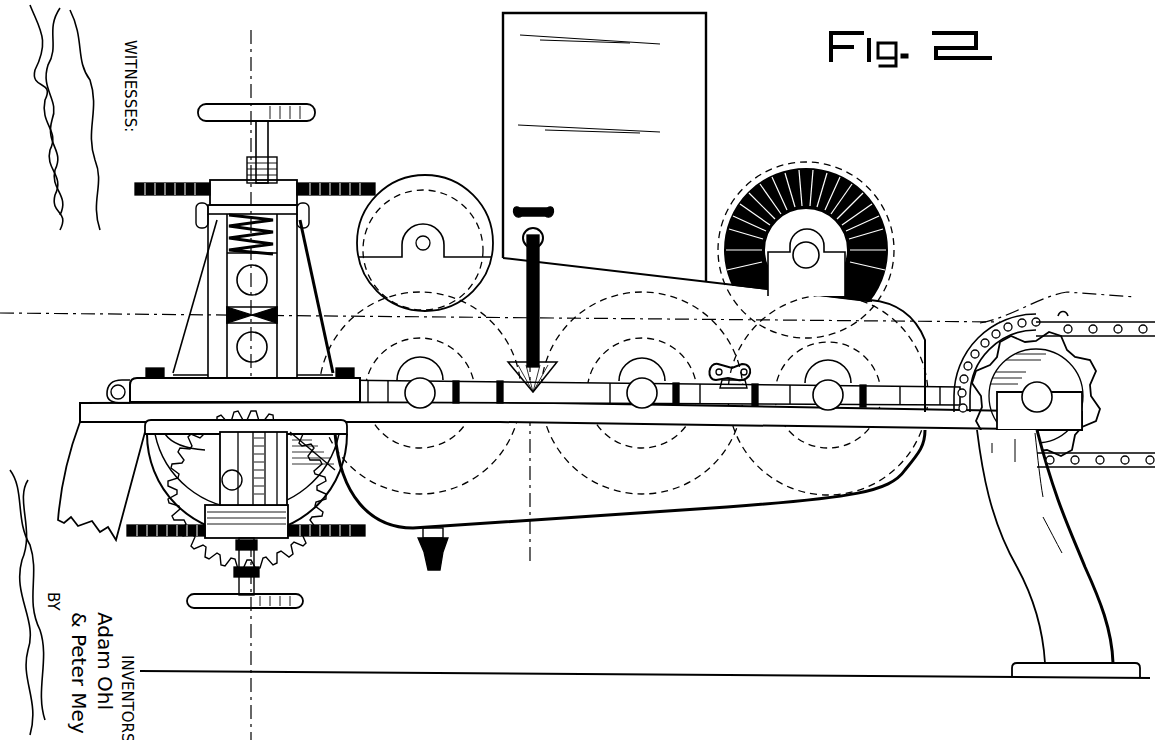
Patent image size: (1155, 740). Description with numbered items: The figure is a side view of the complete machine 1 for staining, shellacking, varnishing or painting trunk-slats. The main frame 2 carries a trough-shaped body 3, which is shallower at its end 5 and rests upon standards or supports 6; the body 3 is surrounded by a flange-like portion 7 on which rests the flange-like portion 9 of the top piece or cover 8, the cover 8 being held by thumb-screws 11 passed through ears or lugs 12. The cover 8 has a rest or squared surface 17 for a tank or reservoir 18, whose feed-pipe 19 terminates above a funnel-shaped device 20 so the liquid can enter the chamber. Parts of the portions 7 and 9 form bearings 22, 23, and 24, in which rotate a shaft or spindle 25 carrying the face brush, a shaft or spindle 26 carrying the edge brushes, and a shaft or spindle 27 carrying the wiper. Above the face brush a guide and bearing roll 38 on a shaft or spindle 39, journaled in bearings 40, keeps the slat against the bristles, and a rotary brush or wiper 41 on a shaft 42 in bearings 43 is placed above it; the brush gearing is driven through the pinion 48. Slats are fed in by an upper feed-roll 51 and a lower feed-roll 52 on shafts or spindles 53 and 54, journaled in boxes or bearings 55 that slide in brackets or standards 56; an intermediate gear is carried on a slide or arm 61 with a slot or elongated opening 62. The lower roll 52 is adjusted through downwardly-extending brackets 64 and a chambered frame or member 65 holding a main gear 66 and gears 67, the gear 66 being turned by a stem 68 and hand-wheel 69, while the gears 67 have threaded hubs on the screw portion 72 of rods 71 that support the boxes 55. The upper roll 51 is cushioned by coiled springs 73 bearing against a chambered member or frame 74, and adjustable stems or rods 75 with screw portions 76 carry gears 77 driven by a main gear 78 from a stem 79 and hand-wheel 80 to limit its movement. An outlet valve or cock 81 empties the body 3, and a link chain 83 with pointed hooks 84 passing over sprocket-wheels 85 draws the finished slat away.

The complete machine 1 is at (407, 144).
The main frame 2 is at (85, 410).
The trough-shaped body 3 is at (716, 500).
The end of trough-shaped body 5 is at (599, 289).
The standards or supports 6 is at (595, 387).
The flange-like portion 7 is at (490, 408).
The top piece or cover 8 is at (898, 312).
The flange-like portion of cover 9 is at (503, 310).
The thumb-screws 11 is at (742, 366).
The ears or lugs 12 is at (753, 373).
The rest or squared surface 17 is at (666, 268).
The tank or reservoir 18 is at (696, 112).
The feed-pipe 19 is at (540, 305).
The funnel-shaped device 20 is at (545, 380).
The bearings 22 is at (440, 380).
The bearings 23 is at (658, 382).
The bearings 24 is at (848, 383).
The shaft or spindle 25 is at (420, 390).
The shaft or spindle 26 is at (642, 390).
The shaft or spindle 27 is at (830, 392).
The guide and bearing roll 38 is at (460, 187).
The shaft or spindle 39 is at (433, 240).
The bearings 40 is at (420, 238).
The rotary brush or wiper 41 is at (795, 172).
The shaft 42 is at (804, 264).
The bearings 43 is at (822, 245).
The pinion 48 is at (136, 490).
The feed-roll 51 is at (236, 308).
The feed-roll 52 is at (228, 316).
The shaft or spindle 53 is at (236, 280).
The shaft or spindle 54 is at (240, 347).
The boxes or bearings 55 is at (280, 264).
The brackets or standards 56 is at (214, 262).
The slide or arm 61 is at (126, 380).
The slot or elongated opening 62 is at (112, 390).
The downwardly-extending brackets 64 is at (214, 462).
The chambered frame or member 65 is at (230, 538).
The main gear 66 is at (140, 538).
The gears 67 is at (228, 528).
The stem 68 is at (246, 592).
The hand-wheel 69 is at (288, 608).
The rods 71 is at (262, 462).
The screw portion 72 is at (290, 478).
The coiled springs 73 is at (236, 232).
The chambered member or frame 74 is at (232, 188).
The adjustable stems or rods 75 is at (256, 160).
The screw portions 76 is at (268, 165).
The gears 77 is at (195, 183).
The main gear 78 is at (358, 185).
The stem 79 is at (270, 140).
The hand-wheel 80 is at (300, 104).
The outlet valve or cock 81 is at (443, 556).
The link chain 83 is at (990, 345).
The pointed hooks 84 is at (1066, 318).
The sprocket-wheels 85 is at (1100, 424).